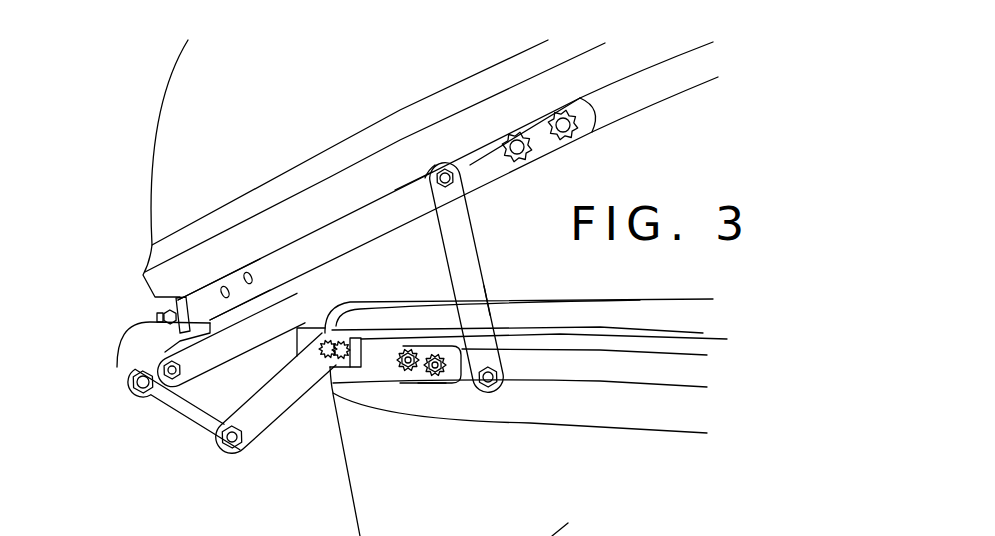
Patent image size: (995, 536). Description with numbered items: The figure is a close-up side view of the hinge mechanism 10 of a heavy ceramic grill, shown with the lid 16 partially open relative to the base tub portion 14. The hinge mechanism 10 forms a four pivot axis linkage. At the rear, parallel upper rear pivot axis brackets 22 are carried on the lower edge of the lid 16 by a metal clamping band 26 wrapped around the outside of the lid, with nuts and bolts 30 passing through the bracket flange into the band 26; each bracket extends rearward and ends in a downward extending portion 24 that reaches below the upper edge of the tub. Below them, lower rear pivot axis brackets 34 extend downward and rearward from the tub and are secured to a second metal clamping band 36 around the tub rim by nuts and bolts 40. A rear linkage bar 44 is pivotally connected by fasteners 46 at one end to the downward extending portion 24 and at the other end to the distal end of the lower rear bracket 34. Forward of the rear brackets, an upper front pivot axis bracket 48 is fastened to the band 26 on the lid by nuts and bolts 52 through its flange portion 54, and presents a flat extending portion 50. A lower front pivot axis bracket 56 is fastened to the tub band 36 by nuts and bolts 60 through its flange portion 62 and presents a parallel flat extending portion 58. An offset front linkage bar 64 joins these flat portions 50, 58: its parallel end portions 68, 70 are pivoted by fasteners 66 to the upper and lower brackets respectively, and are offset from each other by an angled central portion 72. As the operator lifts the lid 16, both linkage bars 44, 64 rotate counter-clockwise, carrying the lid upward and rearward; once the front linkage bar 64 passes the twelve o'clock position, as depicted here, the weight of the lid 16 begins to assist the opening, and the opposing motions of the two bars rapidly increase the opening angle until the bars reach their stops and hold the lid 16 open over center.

The hinge mechanism 10 is at (119, 461).
The base tub portion 14 is at (340, 498).
The lid 16 is at (165, 88).
The upper rear pivot axis brackets 22 is at (143, 323).
The downward extending portion 24 is at (123, 373).
The metal clamping band 26 is at (660, 75).
The nuts and bolts 30 is at (182, 292).
The lower rear pivot axis brackets 34 is at (285, 407).
The metal clamping band 36 is at (643, 377).
The nuts and bolts 40 is at (327, 331).
The rear linkage bar 44 is at (183, 418).
The fasteners 46 is at (133, 396).
The upper front pivot axis brackets 48 is at (564, 141).
The flat extending portion 50 is at (430, 180).
The nuts and bolts 52 is at (578, 122).
The flange portion 54 is at (547, 152).
The lower front pivot axis brackets 56 is at (432, 378).
The flat extending portion 58 is at (462, 383).
The nuts and bolts 60 is at (403, 366).
The flange portion 62 is at (433, 350).
The offset front linkage bar 64 is at (483, 266).
The fasteners 66 is at (447, 168).
The end portion 68 is at (462, 180).
The end portion 70 is at (498, 362).
The central portion 72 is at (477, 287).